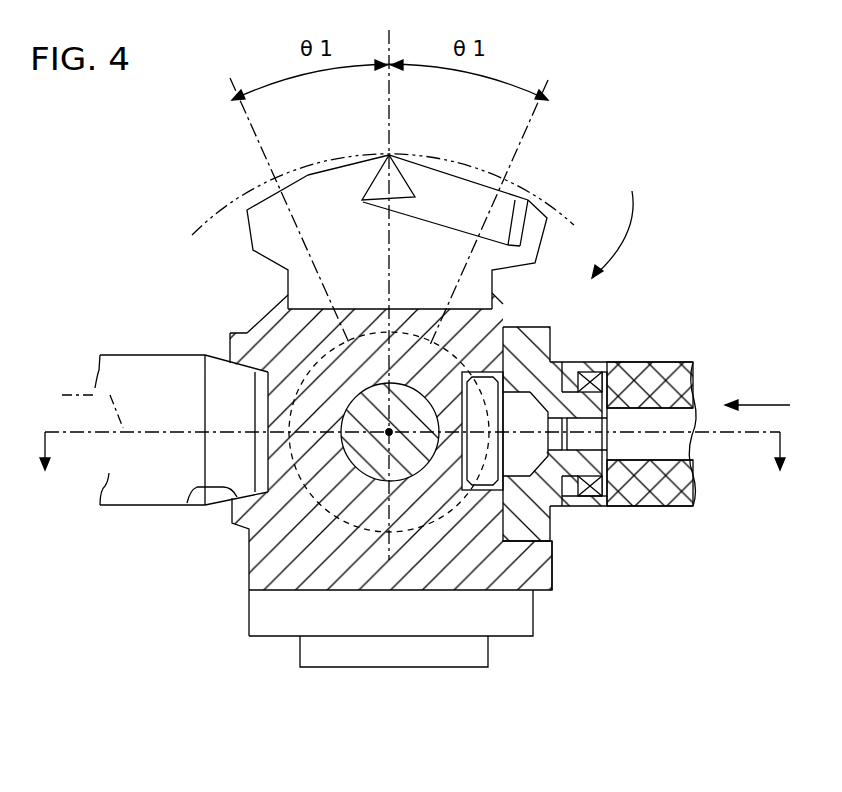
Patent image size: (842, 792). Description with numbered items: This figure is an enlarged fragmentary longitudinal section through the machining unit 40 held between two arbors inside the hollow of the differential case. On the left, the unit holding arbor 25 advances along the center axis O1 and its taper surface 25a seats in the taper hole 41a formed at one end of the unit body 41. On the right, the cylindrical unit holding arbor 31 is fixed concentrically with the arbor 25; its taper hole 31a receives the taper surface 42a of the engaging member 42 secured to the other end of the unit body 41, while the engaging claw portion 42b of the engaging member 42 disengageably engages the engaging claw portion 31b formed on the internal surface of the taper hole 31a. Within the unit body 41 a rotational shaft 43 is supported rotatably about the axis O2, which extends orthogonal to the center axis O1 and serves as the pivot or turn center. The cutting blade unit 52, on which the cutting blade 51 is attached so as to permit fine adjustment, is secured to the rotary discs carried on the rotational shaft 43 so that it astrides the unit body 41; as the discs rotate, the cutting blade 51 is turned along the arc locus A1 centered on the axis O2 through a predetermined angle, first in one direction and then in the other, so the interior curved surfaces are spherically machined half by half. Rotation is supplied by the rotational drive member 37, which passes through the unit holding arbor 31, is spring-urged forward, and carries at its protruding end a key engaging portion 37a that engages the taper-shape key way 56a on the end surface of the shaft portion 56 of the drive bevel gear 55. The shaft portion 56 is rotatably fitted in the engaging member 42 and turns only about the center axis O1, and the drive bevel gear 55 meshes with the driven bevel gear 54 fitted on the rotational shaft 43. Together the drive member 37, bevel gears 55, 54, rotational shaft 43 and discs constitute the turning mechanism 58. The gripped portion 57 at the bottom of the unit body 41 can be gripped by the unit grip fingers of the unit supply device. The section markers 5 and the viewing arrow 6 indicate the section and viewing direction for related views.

The section line V-V 5 is at (412, 469).
The viewing direction arrow 6 is at (757, 390).
The unit holding arbor 25 is at (142, 370).
The taper surface 25a is at (217, 370).
The cylindrical unit holding arbor 31 is at (674, 372).
The taper hole 31a is at (566, 506).
The engaging claw portion 31b is at (631, 498).
The rotational drive member 37 is at (684, 476).
The key engaging portion 37a is at (629, 472).
The machining unit 40 is at (619, 220).
The unit body 41 is at (275, 548).
The taper hole 41a is at (237, 383).
The engaging member 42 is at (527, 548).
The taper surface 42a is at (593, 367).
The engaging claw portion 42b is at (598, 497).
The rotational shaft 43 is at (363, 467).
The cutting blade 51 is at (396, 182).
The cutting blade unit 52 is at (280, 248).
The driven bevel gear 54 is at (442, 536).
The drive bevel gear 55 is at (525, 385).
The shaft portion 56 is at (561, 393).
The taper-shape key way 56a is at (650, 372).
The gripped portion 57 is at (400, 650).
The turning mechanism 58 is at (485, 372).
The arc locus A1 is at (215, 217).
The center axis O1 is at (84, 394).
The axis O2 is at (405, 420).